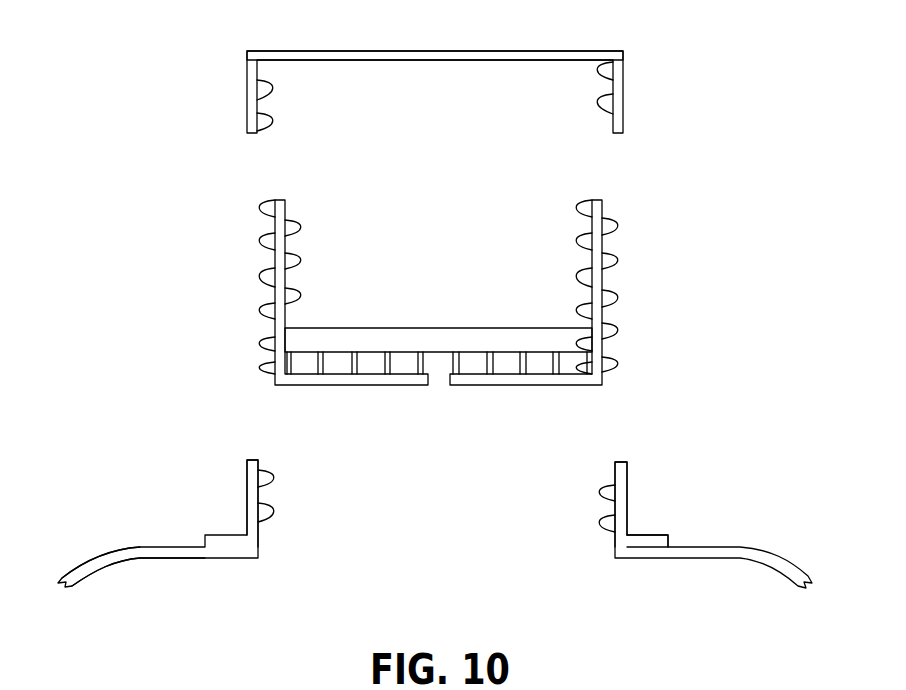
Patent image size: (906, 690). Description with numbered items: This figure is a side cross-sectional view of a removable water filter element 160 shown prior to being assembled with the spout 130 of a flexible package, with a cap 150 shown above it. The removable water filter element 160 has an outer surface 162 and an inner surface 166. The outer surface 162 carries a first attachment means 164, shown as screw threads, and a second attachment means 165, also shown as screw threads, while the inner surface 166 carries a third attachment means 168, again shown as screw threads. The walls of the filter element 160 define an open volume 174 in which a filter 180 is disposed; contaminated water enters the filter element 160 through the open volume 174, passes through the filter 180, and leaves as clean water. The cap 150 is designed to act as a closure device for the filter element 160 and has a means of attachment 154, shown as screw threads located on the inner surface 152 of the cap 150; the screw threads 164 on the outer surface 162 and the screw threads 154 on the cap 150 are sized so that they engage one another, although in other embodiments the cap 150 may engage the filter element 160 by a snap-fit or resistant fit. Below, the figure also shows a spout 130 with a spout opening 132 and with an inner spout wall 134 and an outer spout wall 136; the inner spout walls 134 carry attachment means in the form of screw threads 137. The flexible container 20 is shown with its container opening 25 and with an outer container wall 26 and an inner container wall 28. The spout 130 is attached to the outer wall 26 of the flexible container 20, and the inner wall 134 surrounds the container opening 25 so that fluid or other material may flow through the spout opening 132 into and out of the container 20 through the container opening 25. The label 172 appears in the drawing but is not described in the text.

The cap 150 is at (391, 71).
The inner surface of cap 152 is at (418, 60).
The screw threads of cap 154 is at (607, 68).
The removable water filter element 160 is at (418, 272).
The outer surface 162 is at (275, 327).
The first attachment means 164 is at (610, 228).
The second attachment means 165 is at (610, 300).
The inner surface 166 is at (285, 317).
The third attachment means 168 is at (293, 285).
The channel cavity 172 is at (457, 205).
The open volume 174 is at (473, 287).
The filter 180 is at (478, 340).
The spout opening 132 is at (624, 504).
The spout 130 is at (620, 505).
The inner spout wall 134 is at (614, 540).
The container opening 25 is at (255, 545).
The flexible container 20 is at (85, 567).
The outer container wall 26 is at (152, 546).
The inner container wall 28 is at (208, 558).
The outer spout wall 136 is at (248, 495).
The screw threads of spout 137 is at (262, 482).